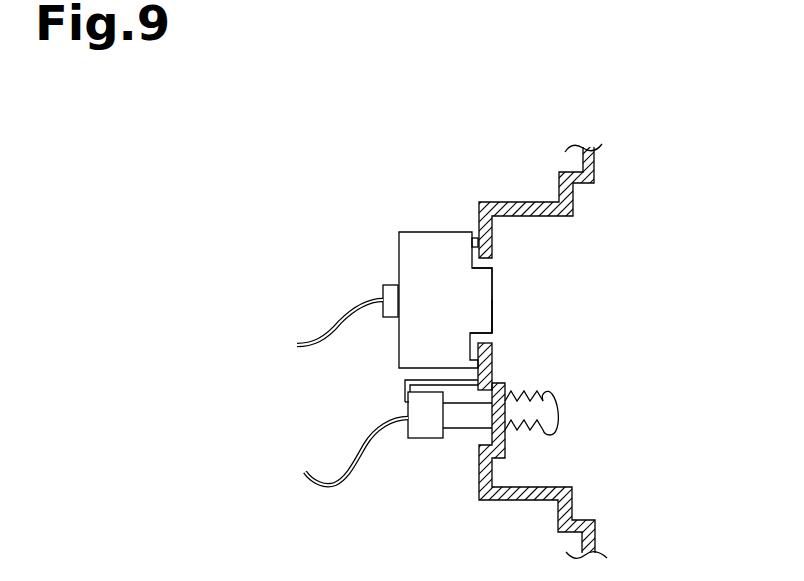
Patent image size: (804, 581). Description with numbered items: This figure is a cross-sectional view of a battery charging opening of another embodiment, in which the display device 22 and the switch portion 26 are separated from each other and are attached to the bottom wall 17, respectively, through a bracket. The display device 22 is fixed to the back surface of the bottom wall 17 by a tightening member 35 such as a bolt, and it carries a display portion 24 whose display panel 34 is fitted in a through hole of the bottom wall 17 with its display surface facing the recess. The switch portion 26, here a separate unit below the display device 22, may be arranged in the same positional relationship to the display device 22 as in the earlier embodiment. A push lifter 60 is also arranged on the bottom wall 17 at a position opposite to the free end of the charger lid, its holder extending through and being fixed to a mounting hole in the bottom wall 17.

The bottom wall 17 is at (556, 218).
The display device 22 is at (414, 232).
The display portion 24 is at (492, 276).
The switch portion 26 is at (428, 458).
The display panel 34 is at (492, 318).
The tightening member 35 is at (475, 238).
The push lifter 60 is at (540, 392).